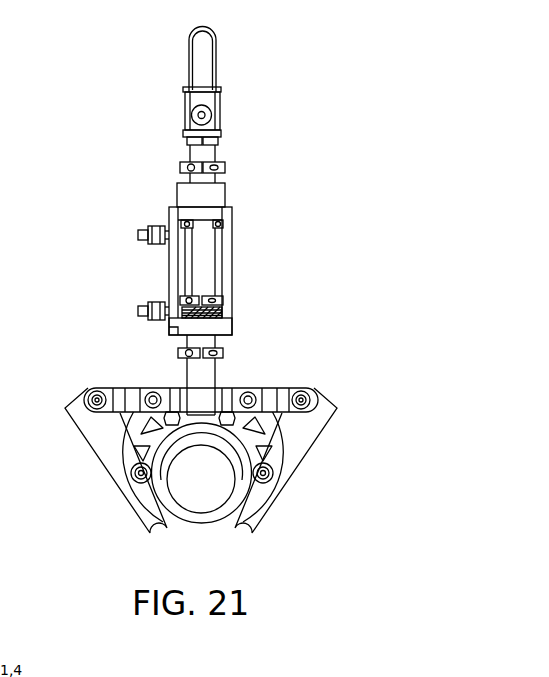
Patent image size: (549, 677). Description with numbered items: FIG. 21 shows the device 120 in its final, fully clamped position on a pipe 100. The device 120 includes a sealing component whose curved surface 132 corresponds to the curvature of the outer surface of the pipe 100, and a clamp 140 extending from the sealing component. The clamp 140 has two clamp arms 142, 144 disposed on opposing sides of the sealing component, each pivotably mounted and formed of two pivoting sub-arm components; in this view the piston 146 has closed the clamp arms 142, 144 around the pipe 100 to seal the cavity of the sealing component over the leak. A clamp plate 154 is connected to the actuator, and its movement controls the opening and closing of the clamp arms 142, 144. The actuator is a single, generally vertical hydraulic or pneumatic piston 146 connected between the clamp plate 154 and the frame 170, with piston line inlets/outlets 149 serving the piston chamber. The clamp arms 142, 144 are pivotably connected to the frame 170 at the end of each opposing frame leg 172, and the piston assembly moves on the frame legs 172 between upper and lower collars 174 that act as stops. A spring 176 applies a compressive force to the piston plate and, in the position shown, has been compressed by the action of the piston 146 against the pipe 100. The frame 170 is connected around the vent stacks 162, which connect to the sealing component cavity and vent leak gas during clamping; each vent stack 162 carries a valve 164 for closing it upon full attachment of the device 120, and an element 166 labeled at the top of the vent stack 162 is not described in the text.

The pipe 100 is at (205, 524).
The device 120 is at (287, 143).
The curved surface 132 is at (226, 452).
The clamp 140 is at (313, 473).
The clamp arm 142 is at (123, 490).
The clamp arm 144 is at (268, 505).
The piston 146 is at (232, 242).
The piston line inlets/outlets 149 is at (140, 235).
The clamp plate 154 is at (170, 390).
The vent stack 162 is at (185, 157).
The valve 164 is at (187, 117).
The handle 166 is at (160, 73).
The frame 170 is at (222, 327).
The frame leg 172 is at (198, 270).
The collar 174 is at (185, 300).
The spring 176 is at (215, 312).